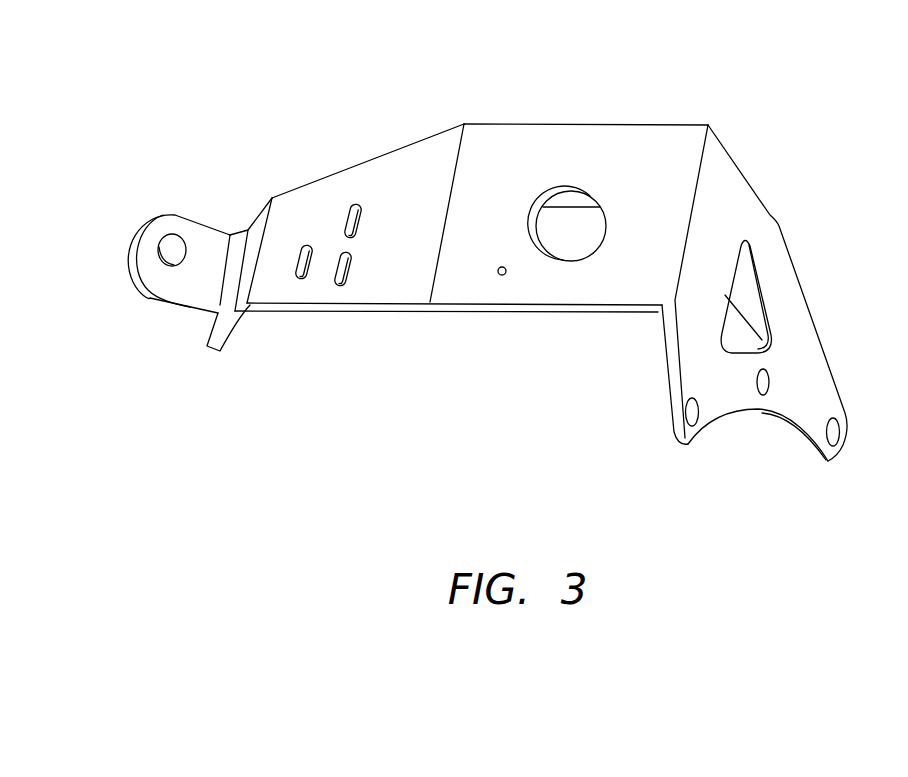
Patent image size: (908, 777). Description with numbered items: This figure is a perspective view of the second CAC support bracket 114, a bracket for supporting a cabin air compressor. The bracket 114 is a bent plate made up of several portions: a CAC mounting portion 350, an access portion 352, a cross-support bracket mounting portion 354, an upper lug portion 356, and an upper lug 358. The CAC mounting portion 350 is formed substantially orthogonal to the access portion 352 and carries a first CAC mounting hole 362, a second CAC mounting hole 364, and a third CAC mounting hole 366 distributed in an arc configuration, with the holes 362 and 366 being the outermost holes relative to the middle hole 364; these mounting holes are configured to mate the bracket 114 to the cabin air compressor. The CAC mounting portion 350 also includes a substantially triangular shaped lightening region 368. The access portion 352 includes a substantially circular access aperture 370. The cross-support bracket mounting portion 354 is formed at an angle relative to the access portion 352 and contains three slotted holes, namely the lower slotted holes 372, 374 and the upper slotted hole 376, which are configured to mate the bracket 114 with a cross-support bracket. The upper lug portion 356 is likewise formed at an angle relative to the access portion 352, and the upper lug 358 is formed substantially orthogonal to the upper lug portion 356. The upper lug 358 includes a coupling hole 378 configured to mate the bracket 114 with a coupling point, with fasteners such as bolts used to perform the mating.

The second CAC support bracket 114 is at (308, 487).
The CAC mounting portion 350 is at (797, 323).
The access portion 352 is at (518, 140).
The cross-support bracket mounting portion 354 is at (417, 160).
The upper lug portion 356 is at (242, 235).
The upper lug 358 is at (208, 235).
The first CAC mounting hole 362 is at (830, 455).
The second CAC mounting hole 364 is at (760, 412).
The third CAC mounting hole 366 is at (690, 427).
The lightening region 368 is at (755, 283).
The access aperture 370 is at (563, 263).
The lower slotted hole 372 is at (340, 286).
The lower slotted hole 374 is at (356, 204).
The upper slotted hole 376 is at (302, 279).
The coupling hole 378 is at (170, 263).